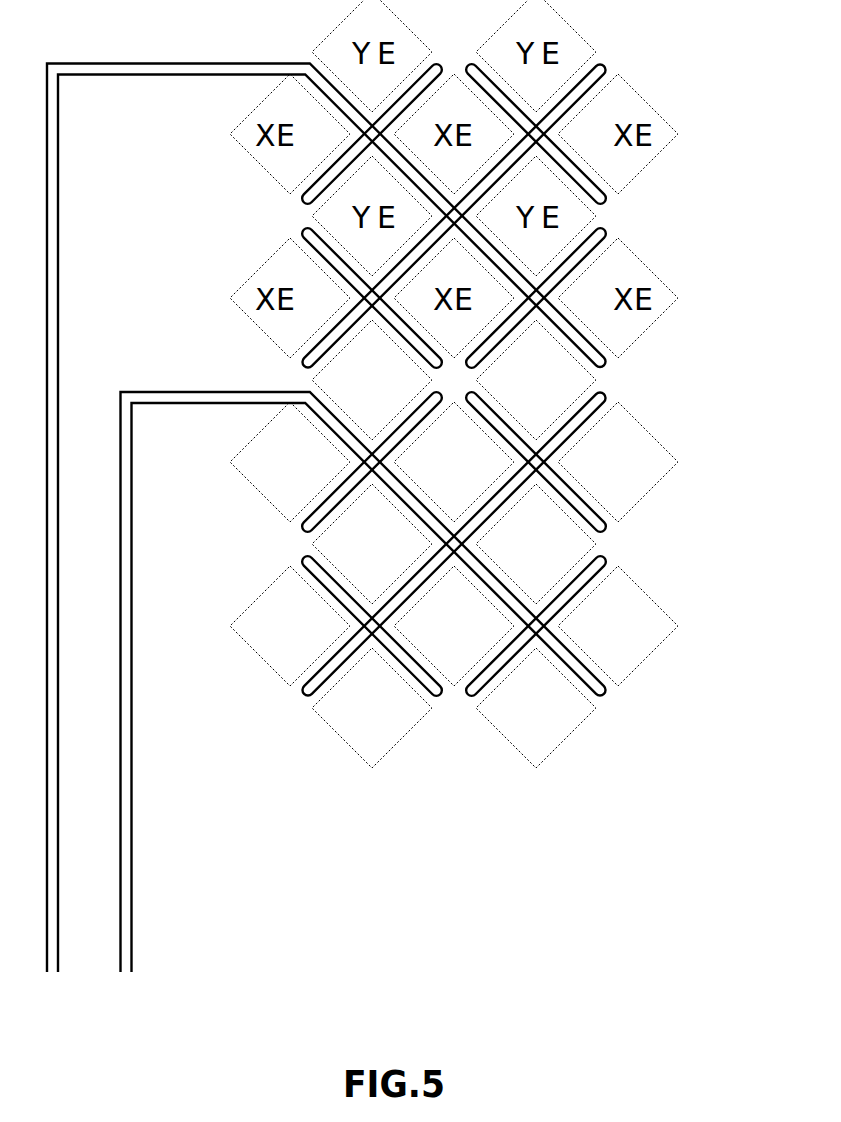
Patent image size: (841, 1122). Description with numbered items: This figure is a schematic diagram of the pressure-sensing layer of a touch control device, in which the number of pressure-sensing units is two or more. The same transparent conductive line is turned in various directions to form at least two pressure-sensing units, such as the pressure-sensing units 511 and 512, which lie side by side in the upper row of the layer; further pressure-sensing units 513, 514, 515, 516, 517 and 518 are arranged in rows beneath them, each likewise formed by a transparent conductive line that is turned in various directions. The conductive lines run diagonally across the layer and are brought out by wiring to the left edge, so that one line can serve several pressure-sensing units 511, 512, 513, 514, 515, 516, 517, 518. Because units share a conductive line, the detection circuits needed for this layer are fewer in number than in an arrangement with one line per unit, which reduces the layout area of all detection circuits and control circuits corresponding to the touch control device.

The pressure-sensing unit 511 is at (300, 206).
The pressure-sensing unit 512 is at (611, 211).
The pressure-sensing unit 513 is at (300, 370).
The pressure-sensing unit 514 is at (611, 375).
The pressure-sensing unit 515 is at (300, 534).
The pressure-sensing unit 516 is at (611, 539).
The pressure-sensing unit 517 is at (300, 698).
The pressure-sensing unit 518 is at (611, 703).